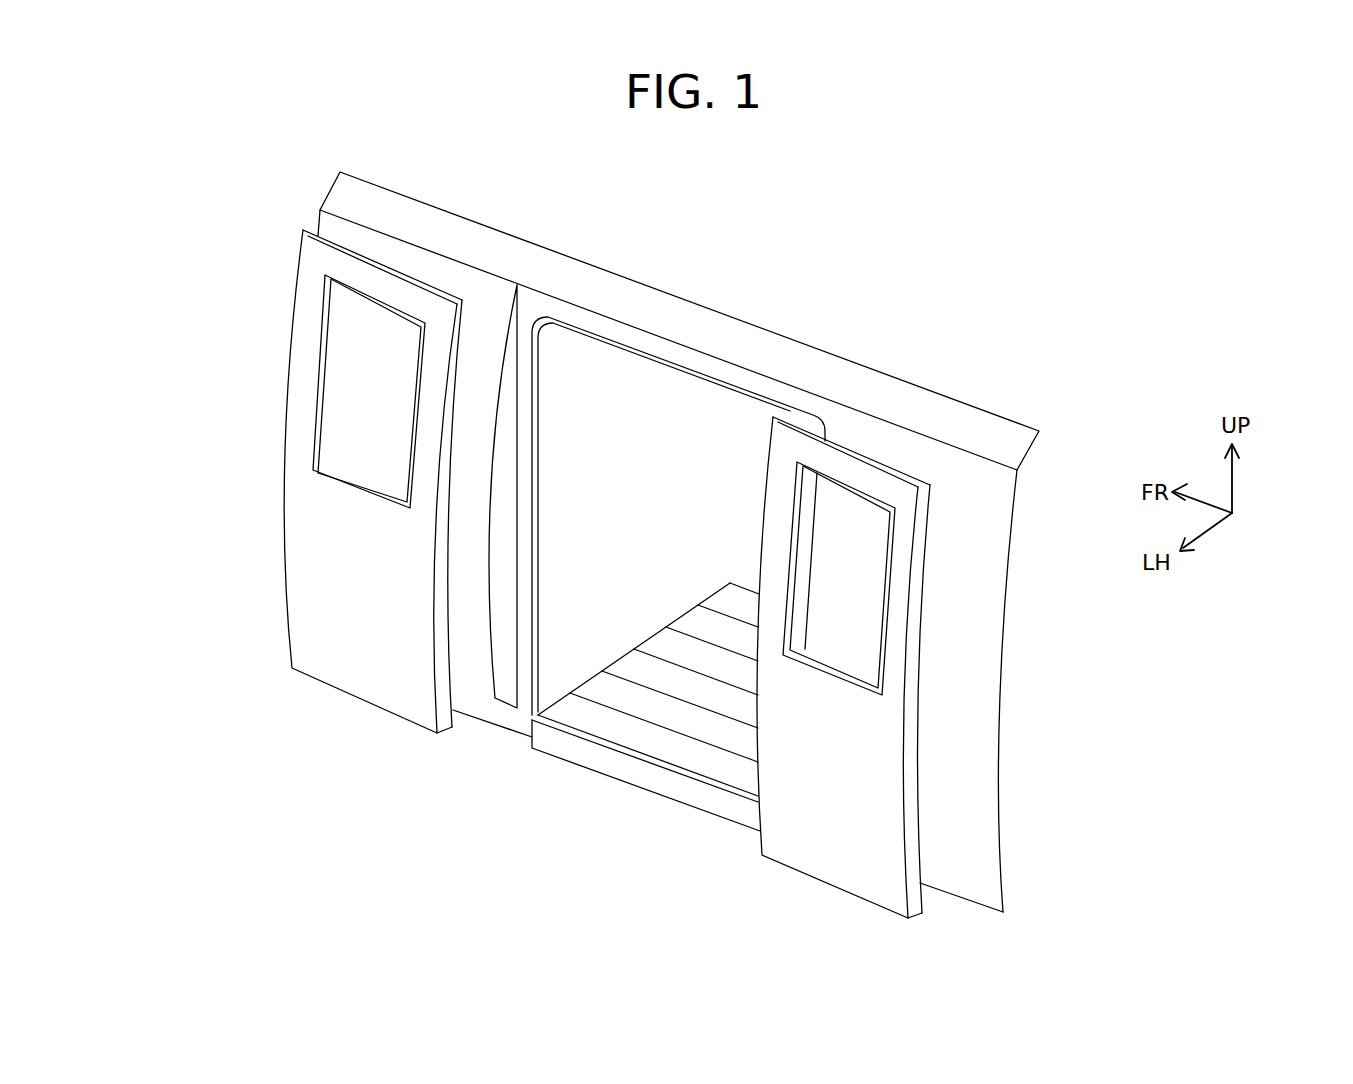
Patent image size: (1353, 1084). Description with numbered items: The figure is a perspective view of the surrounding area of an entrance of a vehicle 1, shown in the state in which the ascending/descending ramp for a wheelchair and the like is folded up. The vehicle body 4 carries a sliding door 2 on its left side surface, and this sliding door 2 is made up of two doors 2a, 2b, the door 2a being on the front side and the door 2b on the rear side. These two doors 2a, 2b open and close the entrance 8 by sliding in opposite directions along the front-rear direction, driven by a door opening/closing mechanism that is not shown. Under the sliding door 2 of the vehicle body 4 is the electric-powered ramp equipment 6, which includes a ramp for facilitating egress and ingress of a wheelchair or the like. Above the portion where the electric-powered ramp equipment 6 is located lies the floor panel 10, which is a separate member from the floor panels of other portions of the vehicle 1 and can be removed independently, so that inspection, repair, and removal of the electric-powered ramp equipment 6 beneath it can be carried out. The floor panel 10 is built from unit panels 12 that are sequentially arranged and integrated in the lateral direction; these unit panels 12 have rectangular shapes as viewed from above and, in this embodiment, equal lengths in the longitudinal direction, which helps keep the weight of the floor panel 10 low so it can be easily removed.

The vehicle 1 is at (868, 306).
The sliding door 2 is at (651, 577).
The door 2a is at (340, 573).
The door 2b is at (883, 817).
The vehicle body 4 is at (985, 578).
The electric-powered ramp equipment 6 is at (642, 778).
The entrance 8 is at (685, 425).
The floor panel 10 is at (610, 729).
The unit panels 12 is at (652, 638).